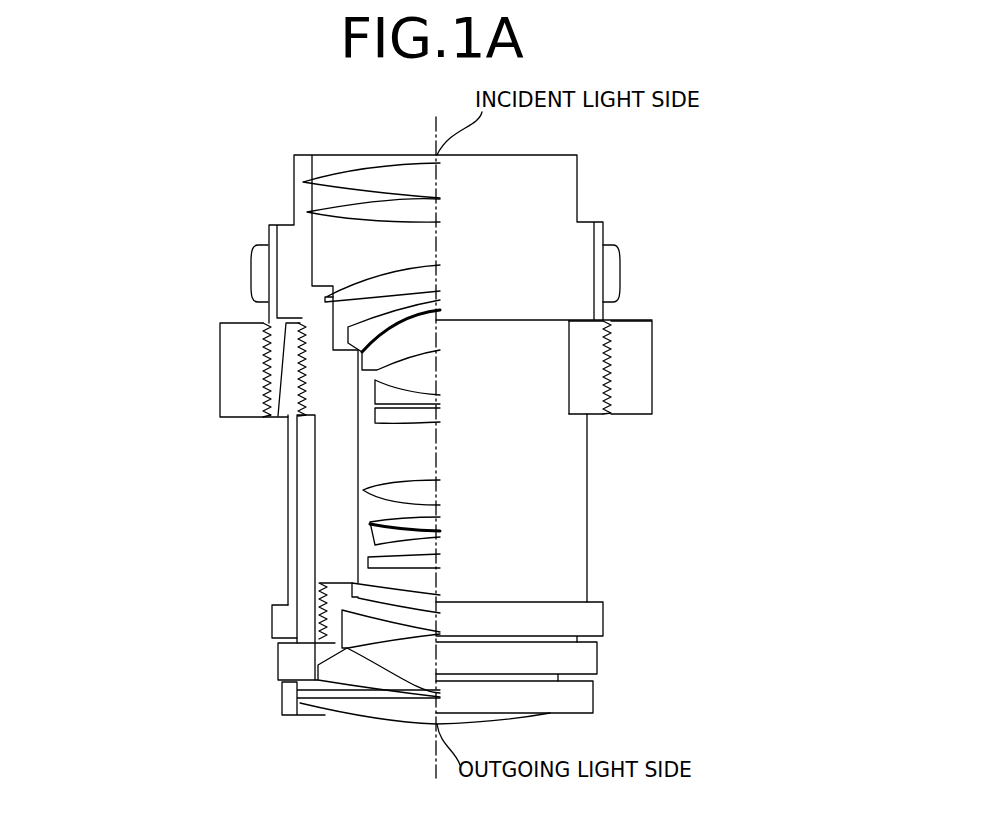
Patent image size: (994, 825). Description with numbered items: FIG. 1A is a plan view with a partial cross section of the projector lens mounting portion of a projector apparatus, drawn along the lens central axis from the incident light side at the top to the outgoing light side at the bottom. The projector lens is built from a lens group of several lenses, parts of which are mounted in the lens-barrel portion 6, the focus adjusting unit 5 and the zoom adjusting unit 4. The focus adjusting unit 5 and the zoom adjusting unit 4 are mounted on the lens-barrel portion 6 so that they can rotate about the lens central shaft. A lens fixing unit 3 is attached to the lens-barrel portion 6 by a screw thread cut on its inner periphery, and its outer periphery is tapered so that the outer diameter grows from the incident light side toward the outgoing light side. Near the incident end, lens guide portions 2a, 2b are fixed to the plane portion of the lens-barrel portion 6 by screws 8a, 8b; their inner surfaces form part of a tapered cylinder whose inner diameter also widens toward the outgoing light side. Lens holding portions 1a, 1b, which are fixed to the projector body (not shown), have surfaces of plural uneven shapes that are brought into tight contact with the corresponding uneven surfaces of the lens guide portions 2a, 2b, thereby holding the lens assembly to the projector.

The lens-barrel portion 6 is at (290, 238).
The screw 8a is at (258, 265).
The screw 8b is at (623, 268).
The lens holding portion 1a is at (230, 400).
The lens holding portion 1b is at (637, 397).
The lens guide portion 2a is at (280, 338).
The lens guide portion 2b is at (592, 347).
The lens fixing unit 3 is at (595, 618).
The zoom adjusting unit 4 is at (590, 662).
The focus adjusting unit 5 is at (583, 700).